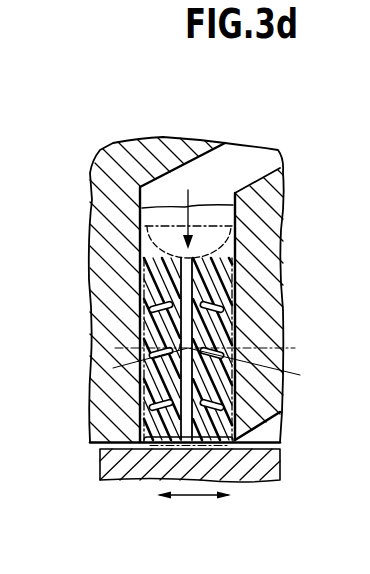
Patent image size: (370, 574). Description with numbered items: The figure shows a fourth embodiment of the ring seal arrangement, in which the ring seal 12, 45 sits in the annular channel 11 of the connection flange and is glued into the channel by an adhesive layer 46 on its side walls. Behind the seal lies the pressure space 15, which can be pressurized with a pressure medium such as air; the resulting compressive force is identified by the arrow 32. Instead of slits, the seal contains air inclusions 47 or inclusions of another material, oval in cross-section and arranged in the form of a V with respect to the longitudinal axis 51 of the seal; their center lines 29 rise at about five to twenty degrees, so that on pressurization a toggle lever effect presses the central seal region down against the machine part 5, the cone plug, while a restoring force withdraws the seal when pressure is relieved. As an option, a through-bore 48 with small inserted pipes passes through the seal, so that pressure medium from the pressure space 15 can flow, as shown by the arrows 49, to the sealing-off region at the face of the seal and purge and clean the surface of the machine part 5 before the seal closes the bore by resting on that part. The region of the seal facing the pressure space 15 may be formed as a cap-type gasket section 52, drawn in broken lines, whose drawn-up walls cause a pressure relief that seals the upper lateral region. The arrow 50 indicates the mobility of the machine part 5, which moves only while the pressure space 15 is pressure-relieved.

The annular channel 11 is at (228, 166).
The pressure space 15 is at (152, 189).
The arrow of compressive force 32 is at (236, 193).
The cap-type gasket section 52 is at (228, 246).
The ring seal 12 is at (236, 268).
The ring seal 45 is at (307, 268).
The adhesive layer 46 is at (268, 305).
The center line 29 is at (276, 352).
The through-bore 48 is at (198, 388).
The air inclusions 47 is at (148, 304).
The arrows 49 is at (192, 433).
The machine part 5 is at (240, 470).
The arrow 50 is at (196, 500).
The longitudinal axis 51 is at (140, 264).